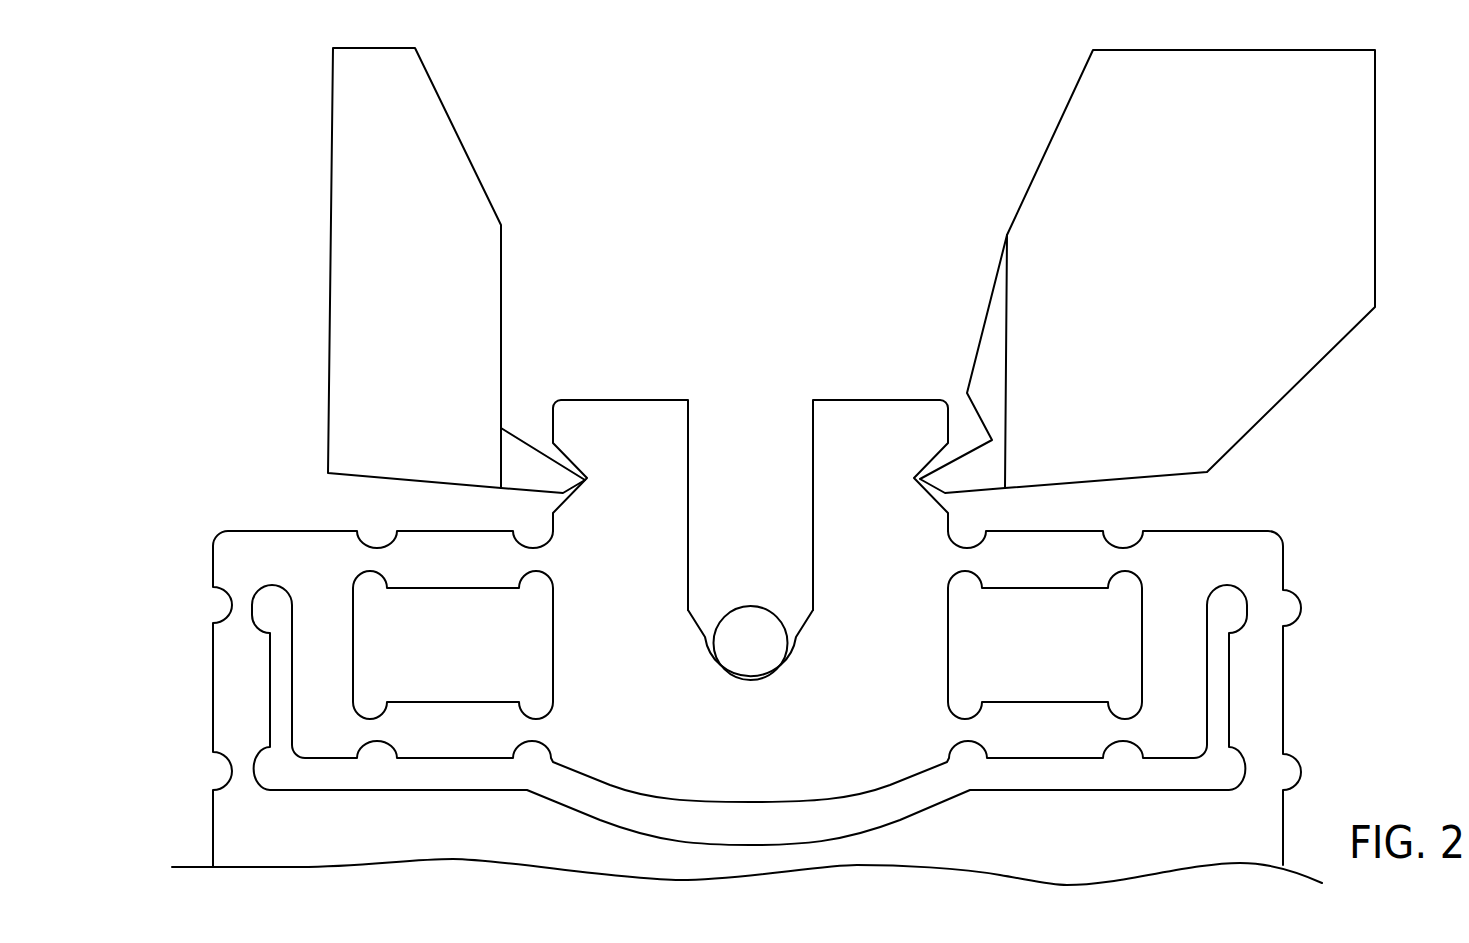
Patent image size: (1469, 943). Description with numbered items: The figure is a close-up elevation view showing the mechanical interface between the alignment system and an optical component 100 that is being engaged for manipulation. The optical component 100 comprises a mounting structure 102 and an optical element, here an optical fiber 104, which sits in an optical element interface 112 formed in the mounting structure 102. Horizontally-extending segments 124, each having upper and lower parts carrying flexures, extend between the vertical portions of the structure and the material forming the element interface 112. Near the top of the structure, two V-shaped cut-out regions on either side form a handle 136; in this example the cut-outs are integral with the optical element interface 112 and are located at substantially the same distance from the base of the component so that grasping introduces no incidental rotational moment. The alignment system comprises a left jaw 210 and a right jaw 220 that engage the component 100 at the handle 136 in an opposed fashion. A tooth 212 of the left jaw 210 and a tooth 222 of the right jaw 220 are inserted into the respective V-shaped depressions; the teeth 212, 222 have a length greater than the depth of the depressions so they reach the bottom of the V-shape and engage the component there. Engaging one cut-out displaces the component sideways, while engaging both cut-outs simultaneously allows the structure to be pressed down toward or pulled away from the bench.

The optical component 100 is at (1284, 472).
The mounting structure 102 is at (1232, 529).
The optical fiber 104 is at (740, 607).
The optical element interface 112 is at (792, 630).
The horizontally-extending segments 124 is at (453, 588).
The handle 136 is at (545, 447).
The left jaw 210 is at (502, 273).
The tooth of left jaw 212 is at (512, 432).
The right jaw 220 is at (1104, 483).
The tooth of right jaw 222 is at (975, 493).